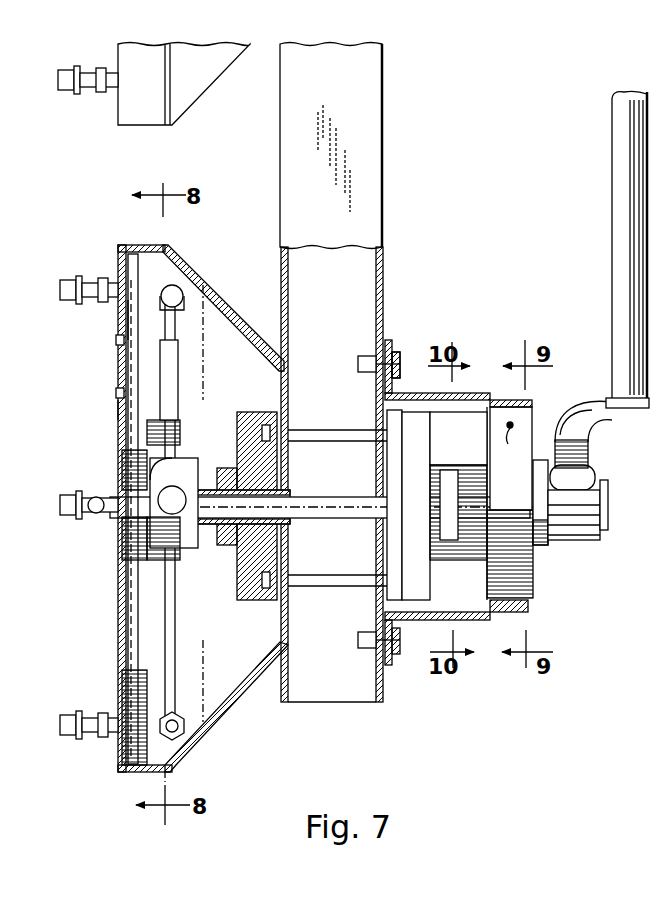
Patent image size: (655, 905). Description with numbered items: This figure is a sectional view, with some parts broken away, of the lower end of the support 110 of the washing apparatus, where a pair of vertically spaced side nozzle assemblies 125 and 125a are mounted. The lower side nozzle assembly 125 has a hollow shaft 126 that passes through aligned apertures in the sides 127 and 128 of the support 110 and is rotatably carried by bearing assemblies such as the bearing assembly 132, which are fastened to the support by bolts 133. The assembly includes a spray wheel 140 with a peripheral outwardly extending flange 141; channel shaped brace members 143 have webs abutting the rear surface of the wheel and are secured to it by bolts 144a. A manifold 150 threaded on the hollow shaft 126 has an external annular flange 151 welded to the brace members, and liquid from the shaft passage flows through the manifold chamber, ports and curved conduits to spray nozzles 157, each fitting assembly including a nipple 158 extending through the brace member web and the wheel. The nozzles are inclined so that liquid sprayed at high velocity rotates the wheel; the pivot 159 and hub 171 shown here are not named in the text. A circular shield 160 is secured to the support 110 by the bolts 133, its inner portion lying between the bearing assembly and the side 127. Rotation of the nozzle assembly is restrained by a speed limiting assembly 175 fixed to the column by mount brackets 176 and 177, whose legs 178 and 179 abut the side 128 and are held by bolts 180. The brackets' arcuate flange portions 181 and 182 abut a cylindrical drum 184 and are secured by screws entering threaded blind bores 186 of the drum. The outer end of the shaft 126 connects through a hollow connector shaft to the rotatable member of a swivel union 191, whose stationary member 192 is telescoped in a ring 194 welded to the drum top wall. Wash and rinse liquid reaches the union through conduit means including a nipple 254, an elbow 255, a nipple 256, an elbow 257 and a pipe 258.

The support 110 is at (383, 213).
The side nozzle assembly 125 is at (102, 402).
The side nozzle assembly 125a is at (106, 118).
The hollow shaft 126 is at (316, 526).
The side 127 is at (288, 322).
The side 128 is at (384, 292).
The bearing assembly 132 is at (423, 458).
The bolts 133 is at (424, 430).
The spray wheel 140 is at (119, 562).
The peripheral flange 141 is at (131, 246).
The brace members 143 is at (126, 320).
The bolts 144a is at (118, 338).
The manifold 150 is at (177, 456).
The external annular flange 151 is at (152, 389).
The spray nozzles 157 is at (92, 285).
The nipple 158 is at (163, 288).
The pivot 159 is at (108, 495).
The circular shield 160 is at (230, 735).
The hub 171 is at (256, 410).
The speed limiting assembly 175 is at (518, 410).
The mount bracket 176 is at (432, 392).
The mount bracket 177 is at (402, 648).
The leg 178 is at (397, 342).
The leg 179 is at (378, 700).
The bolts 180 is at (402, 354).
The arcuate flange portion 181 is at (506, 406).
The arcuate flange portion 182 is at (512, 613).
The cylindrical drum 184 is at (533, 585).
The threaded blind bores 186 is at (505, 442).
The swivel union 191 is at (582, 542).
The stationary member 192 is at (598, 530).
The ring 194 is at (539, 545).
The nipple 254 is at (592, 474).
The elbow 255 is at (584, 424).
The nipple 256 is at (604, 398).
The elbow 257 is at (590, 454).
The pipe 258 is at (612, 293).